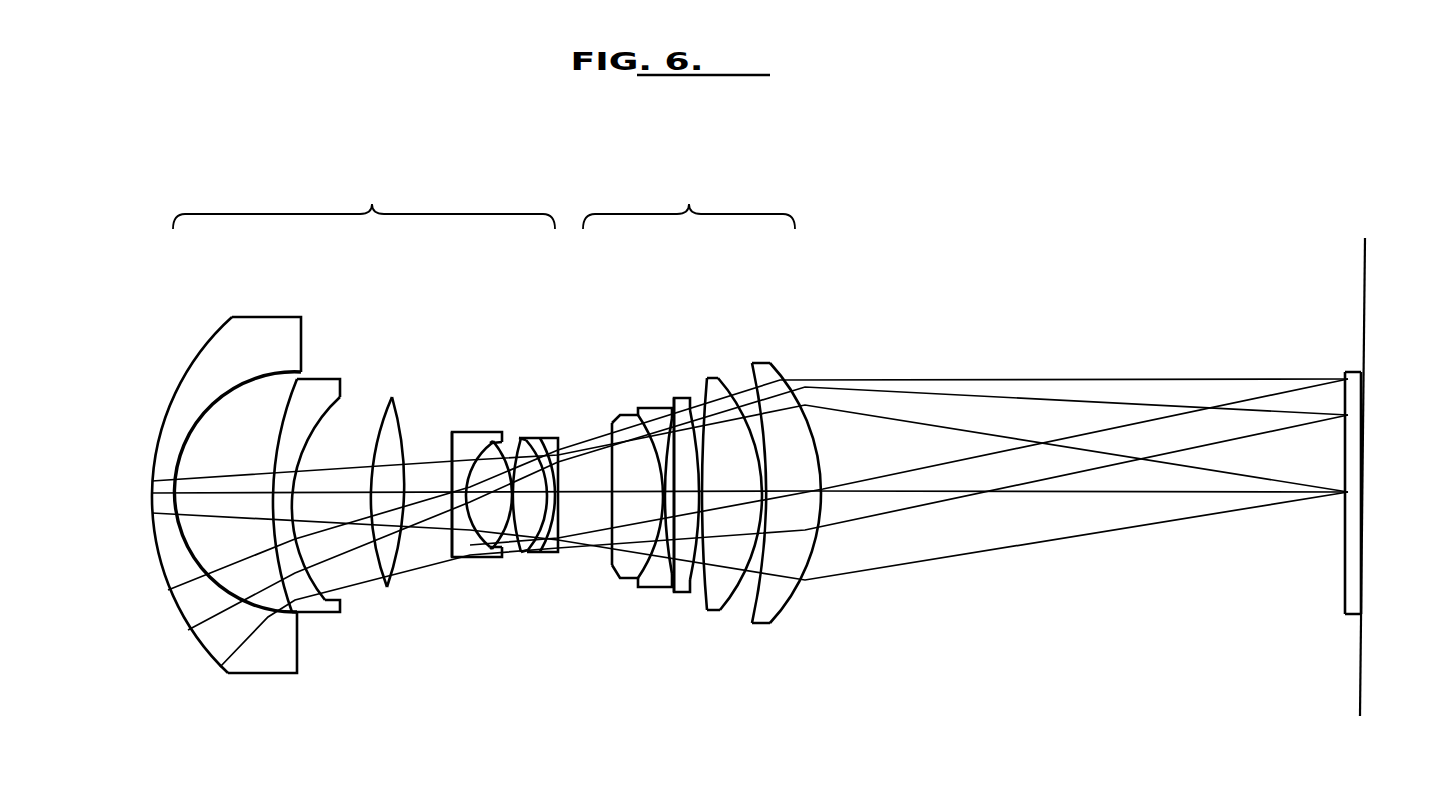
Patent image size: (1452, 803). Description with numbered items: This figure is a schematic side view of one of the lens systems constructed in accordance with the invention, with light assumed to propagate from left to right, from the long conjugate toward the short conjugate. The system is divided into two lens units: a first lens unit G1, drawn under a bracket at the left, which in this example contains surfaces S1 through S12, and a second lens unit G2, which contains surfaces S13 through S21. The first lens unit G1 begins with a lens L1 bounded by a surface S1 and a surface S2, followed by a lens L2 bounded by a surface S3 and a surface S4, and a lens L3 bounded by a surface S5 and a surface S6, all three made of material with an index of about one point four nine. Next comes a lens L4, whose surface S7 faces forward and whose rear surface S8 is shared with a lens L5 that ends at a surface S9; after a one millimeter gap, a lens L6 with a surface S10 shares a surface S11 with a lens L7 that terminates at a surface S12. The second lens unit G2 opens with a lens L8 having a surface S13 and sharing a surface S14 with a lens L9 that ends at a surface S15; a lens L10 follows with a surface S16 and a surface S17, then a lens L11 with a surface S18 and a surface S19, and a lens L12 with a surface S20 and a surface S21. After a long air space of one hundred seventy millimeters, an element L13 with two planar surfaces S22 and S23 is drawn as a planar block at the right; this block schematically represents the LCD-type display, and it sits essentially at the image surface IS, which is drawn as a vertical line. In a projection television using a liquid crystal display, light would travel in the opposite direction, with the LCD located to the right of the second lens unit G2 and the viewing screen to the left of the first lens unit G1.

The first lens unit G1 is at (364, 203).
The second lens unit G2 is at (689, 203).
The lens L1 is at (202, 516).
The lens L2 is at (278, 474).
The lens L3 is at (406, 503).
The lens L4 is at (454, 506).
The lens L5 is at (487, 492).
The lens L6 is at (546, 490).
The lens L7 is at (552, 492).
The lens L8 is at (607, 522).
The lens L9 is at (632, 459).
The lens L10 is at (651, 494).
The lens L11 is at (754, 489).
The lens L12 is at (835, 488).
The lens L13 is at (1350, 522).
The lens surface S1 is at (171, 617).
The lens surface S2 is at (245, 610).
The lens surface S3 is at (291, 397).
The lens surface S4 is at (330, 586).
The lens surface S5 is at (378, 412).
The lens surface S6 is at (407, 577).
The lens surface S7 is at (452, 560).
The lens surface S8 is at (478, 552).
The lens surface S9 is at (497, 555).
The lens surface S10 is at (518, 555).
The lens surface S11 is at (542, 440).
The lens surface S12 is at (560, 548).
The lens surface S13 is at (610, 567).
The lens surface S14 is at (625, 578).
The lens surface S15 is at (653, 410).
The lens surface S16 is at (672, 590).
The lens surface S17 is at (690, 592).
The lens surface S18 is at (703, 603).
The lens surface S19 is at (725, 608).
The lens surface S20 is at (770, 590).
The lens surface S21 is at (820, 553).
The lens surface S22 is at (1344, 576).
The lens surface S23 is at (1362, 576).
The image surface IS is at (1362, 671).